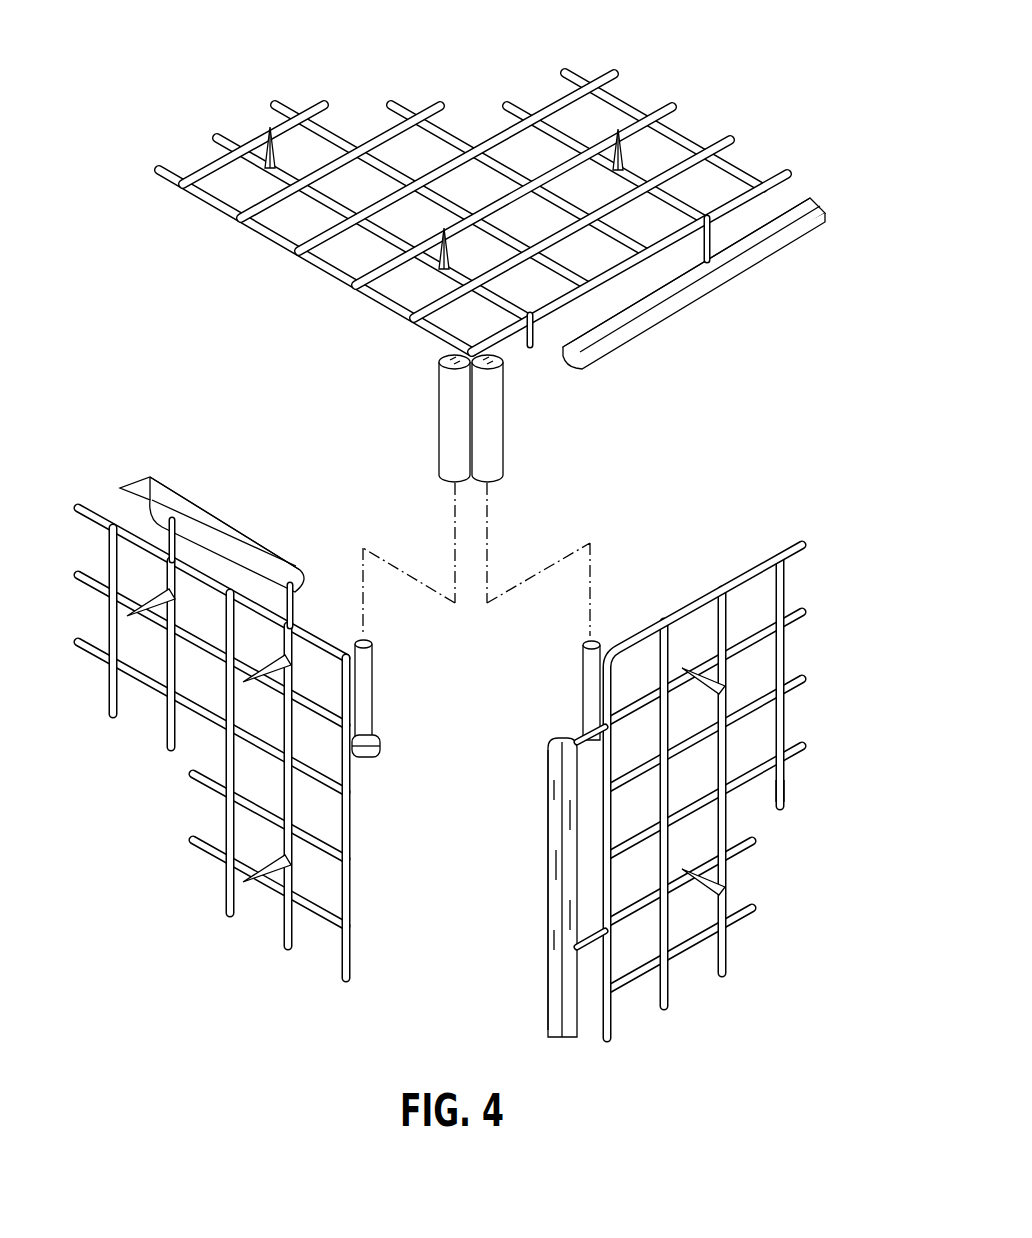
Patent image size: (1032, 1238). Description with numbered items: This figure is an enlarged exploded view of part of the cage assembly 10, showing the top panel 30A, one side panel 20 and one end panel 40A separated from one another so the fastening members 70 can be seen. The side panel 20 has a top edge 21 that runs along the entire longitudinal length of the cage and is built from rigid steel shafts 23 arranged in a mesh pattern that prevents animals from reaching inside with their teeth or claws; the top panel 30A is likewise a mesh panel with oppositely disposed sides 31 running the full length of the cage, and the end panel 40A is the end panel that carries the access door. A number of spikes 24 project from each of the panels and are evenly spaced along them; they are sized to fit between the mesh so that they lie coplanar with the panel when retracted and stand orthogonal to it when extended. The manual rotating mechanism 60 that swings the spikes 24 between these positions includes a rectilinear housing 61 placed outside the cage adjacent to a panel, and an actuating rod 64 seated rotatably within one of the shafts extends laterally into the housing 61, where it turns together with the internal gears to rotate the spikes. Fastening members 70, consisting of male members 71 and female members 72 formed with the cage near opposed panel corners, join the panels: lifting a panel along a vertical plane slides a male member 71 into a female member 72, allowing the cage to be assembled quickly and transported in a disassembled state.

The assembly 10 is at (165, 44).
The side panel 20 is at (742, 572).
The top edge 21 is at (690, 608).
The steel shaft 23 is at (775, 805).
The spike 24 is at (265, 160).
The top panel 30A is at (470, 135).
The side 31 is at (637, 270).
The end panel 40A is at (228, 728).
The manual rotating mechanism 60 is at (713, 268).
The rectilinear housing 61 is at (800, 222).
The actuating rod 64 is at (712, 232).
The fastening member 70 is at (440, 410).
The male member 71 is at (372, 694).
The female member 72 is at (490, 436).